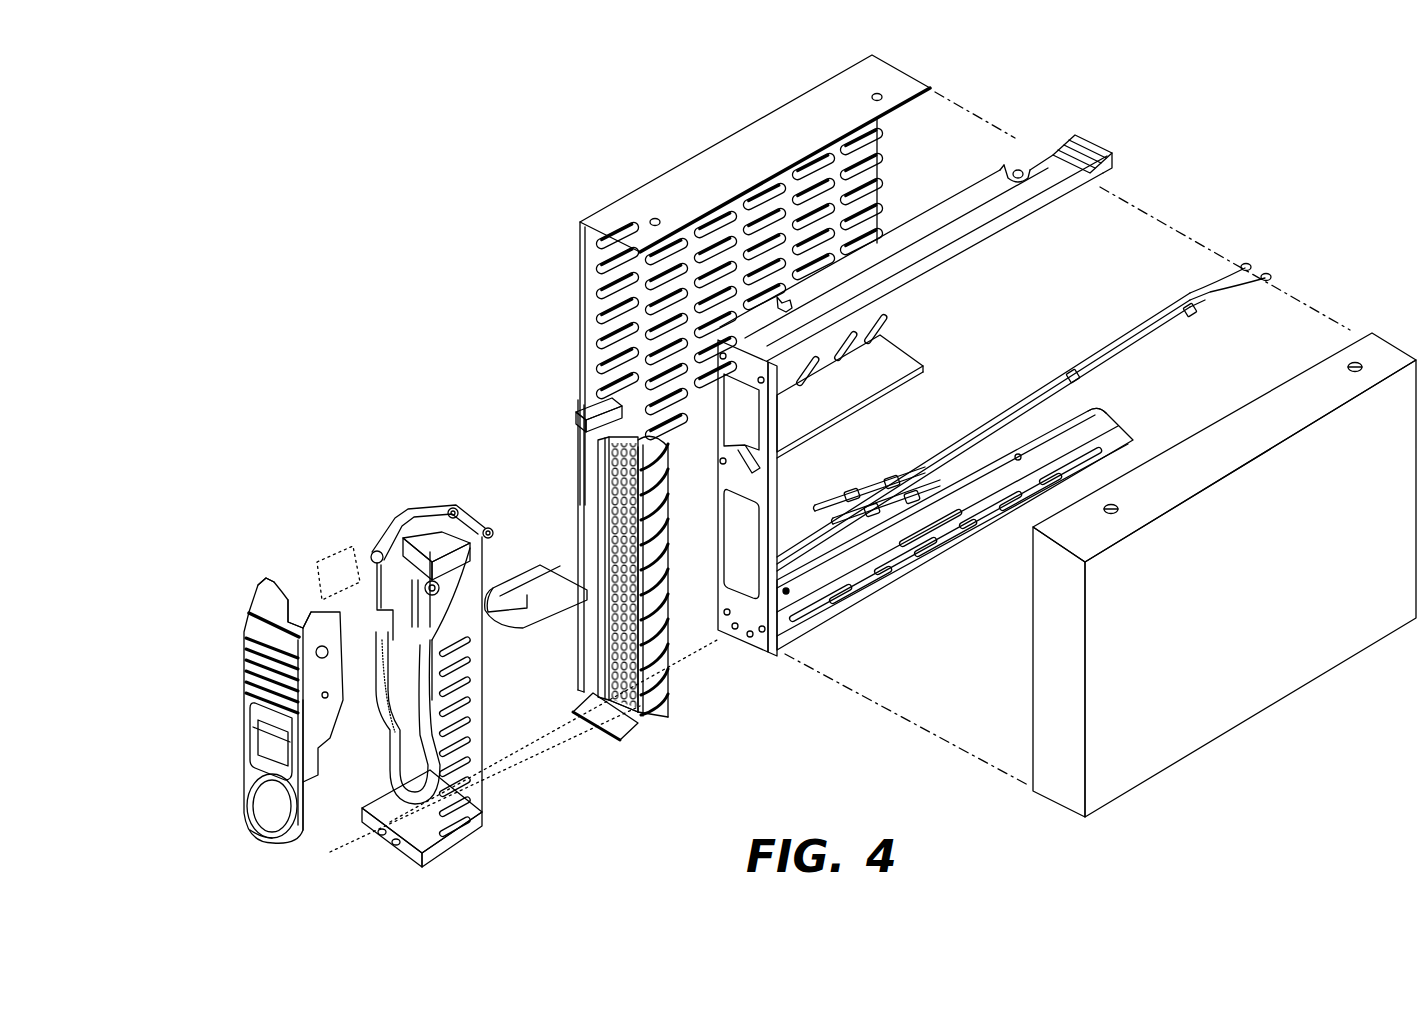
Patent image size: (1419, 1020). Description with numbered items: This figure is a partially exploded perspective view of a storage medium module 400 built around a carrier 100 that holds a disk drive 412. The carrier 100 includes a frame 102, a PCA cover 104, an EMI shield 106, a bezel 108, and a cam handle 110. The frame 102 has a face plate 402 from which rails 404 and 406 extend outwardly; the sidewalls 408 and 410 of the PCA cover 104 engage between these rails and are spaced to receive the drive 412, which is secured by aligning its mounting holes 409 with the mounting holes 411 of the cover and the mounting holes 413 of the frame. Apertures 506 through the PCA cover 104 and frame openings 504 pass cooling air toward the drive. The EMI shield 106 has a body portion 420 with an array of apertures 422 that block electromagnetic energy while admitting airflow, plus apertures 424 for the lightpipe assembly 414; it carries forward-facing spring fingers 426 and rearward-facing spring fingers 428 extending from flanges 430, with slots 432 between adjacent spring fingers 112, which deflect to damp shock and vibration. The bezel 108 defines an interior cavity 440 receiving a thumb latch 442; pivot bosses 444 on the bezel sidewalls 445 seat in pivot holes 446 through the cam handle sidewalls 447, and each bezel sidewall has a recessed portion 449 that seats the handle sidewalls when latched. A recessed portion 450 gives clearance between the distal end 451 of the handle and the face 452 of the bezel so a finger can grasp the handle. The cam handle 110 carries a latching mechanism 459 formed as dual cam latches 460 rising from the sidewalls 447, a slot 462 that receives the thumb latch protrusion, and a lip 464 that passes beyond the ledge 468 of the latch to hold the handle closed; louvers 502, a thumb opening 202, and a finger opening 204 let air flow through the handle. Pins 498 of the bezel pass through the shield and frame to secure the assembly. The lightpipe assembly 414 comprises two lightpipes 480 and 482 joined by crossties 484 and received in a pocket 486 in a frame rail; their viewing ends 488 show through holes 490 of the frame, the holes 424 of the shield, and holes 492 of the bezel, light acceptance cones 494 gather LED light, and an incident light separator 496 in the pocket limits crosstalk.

The carrier 100 is at (317, 131).
The battery module assembly 400 is at (298, 313).
The frame 102 is at (953, 215).
The PCA cover 104 is at (670, 177).
The EMI shield 106 is at (578, 460).
The bezel 108 is at (440, 620).
The cam handle 110 is at (258, 755).
The spring fingers 112 is at (625, 697).
The thumb opening 202 is at (258, 720).
The finger opening 204 is at (258, 818).
The face plate 402 is at (735, 357).
The rail 404 is at (903, 262).
The rail 406 is at (918, 565).
The sidewall 408 is at (735, 147).
The mounting holes 409 is at (1113, 506).
The sidewall 410 is at (912, 360).
The mounting holes 411 is at (652, 220).
The disk drive 412 is at (1045, 678).
The mounting holes 413 is at (780, 300).
The lightpipe assembly 414 is at (975, 431).
The body portion 420 is at (609, 484).
The apertures 422 is at (610, 530).
The apertures 424 is at (630, 712).
The forward-facing spring fingers 426 is at (605, 405).
The rearward-facing spring fingers 428 is at (722, 438).
The flanges 430 is at (600, 656).
The slots 432 is at (690, 580).
The interior cavity 440 is at (408, 770).
The thumb latch 442 is at (523, 585).
The pivot bosses 444 is at (374, 552).
The sidewalls 445 is at (475, 765).
The pivot holes 446 is at (326, 645).
The sidewalls 447 is at (330, 700).
The recessed portion 449 is at (460, 660).
The recessed portion 450 is at (455, 800).
The distal end 451 is at (268, 835).
The face 452 is at (380, 790).
The latching mechanism 459 is at (290, 505).
The cam latches 460 is at (304, 605).
The slot 462 is at (303, 792).
The lip 464 is at (250, 750).
The ledge 468 is at (500, 600).
The lightpipe 480 is at (1128, 334).
The lightpipe 482 is at (1155, 324).
The crossties 484 is at (1070, 372).
The pocket 486 is at (1106, 412).
The viewing ends 488 is at (836, 518).
The holes 490 is at (730, 632).
The holes 492 is at (384, 836).
The light acceptance cones 494 is at (1267, 274).
The incident light separator 496 is at (948, 525).
The pins 498 is at (487, 528).
The louvers 502 is at (255, 670).
The frame openings 504 is at (745, 500).
The apertures 506 is at (833, 238).